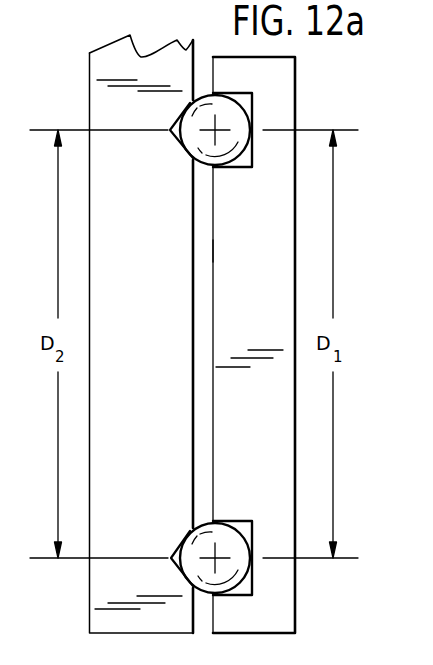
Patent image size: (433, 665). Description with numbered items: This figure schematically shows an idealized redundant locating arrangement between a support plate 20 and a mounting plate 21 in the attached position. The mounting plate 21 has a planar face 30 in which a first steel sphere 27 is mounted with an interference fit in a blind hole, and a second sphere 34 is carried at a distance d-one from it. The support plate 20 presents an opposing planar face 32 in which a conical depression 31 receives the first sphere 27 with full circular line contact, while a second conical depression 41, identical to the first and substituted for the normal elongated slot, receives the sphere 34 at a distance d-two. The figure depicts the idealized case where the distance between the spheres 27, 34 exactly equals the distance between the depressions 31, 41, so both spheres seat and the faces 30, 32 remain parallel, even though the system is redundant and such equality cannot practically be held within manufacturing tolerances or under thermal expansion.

The support plate 20 is at (107, 415).
The mounting plate 21 is at (264, 454).
The first steel sphere 27 is at (233, 112).
The planar face 30 is at (213, 243).
The conical depression 31 is at (185, 113).
The planar face 32 is at (193, 350).
The sphere 34 is at (248, 563).
The conical depression 41 is at (180, 550).